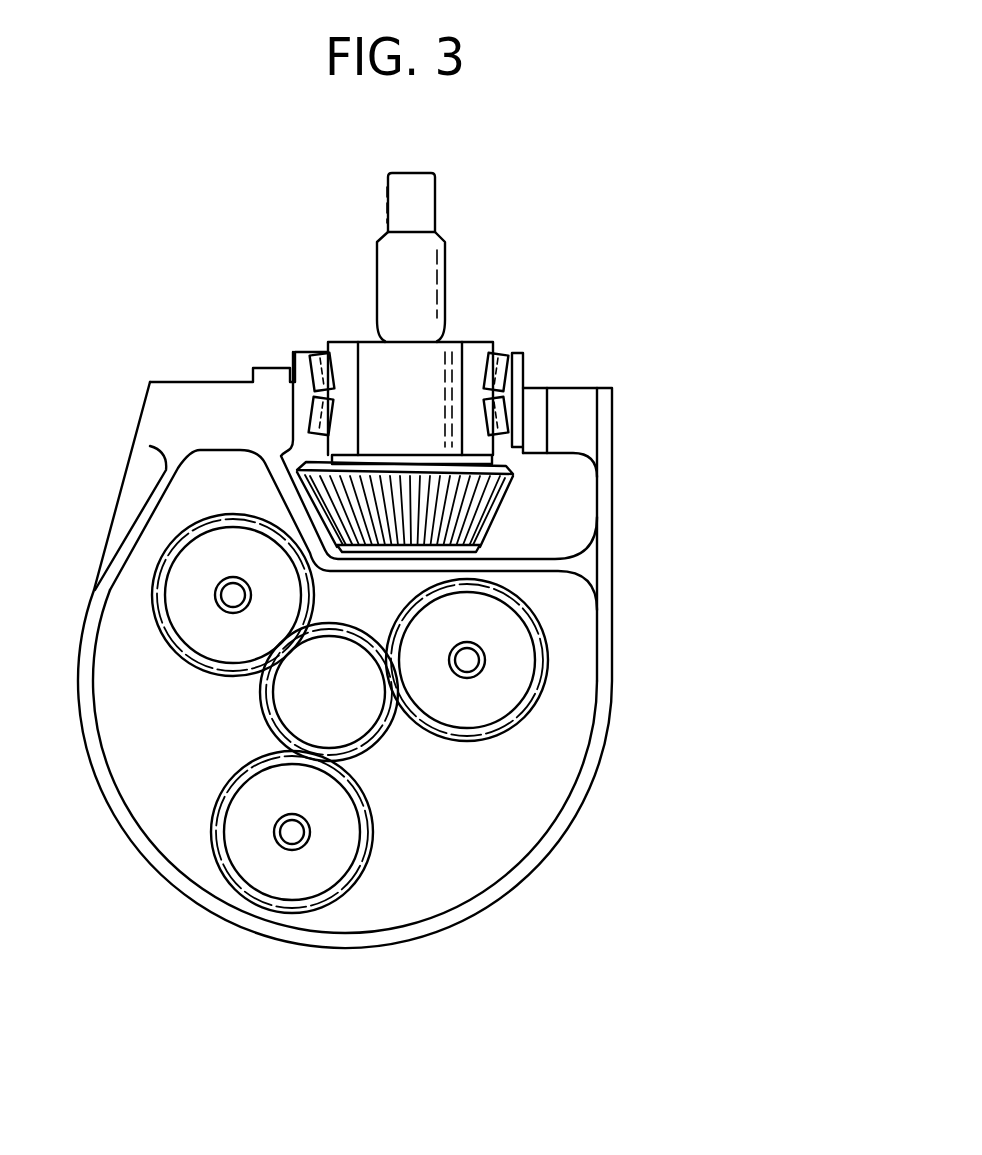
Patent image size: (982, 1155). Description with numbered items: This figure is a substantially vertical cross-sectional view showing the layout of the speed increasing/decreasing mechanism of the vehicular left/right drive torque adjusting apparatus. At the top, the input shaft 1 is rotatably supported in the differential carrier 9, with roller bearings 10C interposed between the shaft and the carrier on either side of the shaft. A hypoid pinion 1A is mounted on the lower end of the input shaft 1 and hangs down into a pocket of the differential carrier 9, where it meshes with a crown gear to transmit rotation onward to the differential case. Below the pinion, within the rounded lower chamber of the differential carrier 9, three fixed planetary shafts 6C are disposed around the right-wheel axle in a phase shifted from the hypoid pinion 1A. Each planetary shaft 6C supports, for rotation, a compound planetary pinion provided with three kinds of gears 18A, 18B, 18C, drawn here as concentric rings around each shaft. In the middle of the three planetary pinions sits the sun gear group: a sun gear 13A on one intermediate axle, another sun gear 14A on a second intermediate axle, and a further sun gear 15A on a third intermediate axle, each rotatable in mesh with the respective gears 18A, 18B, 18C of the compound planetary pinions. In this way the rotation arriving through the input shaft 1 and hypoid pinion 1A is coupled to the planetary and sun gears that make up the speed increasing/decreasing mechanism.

The input shaft 1 is at (450, 342).
The hypoid pinion 1A is at (517, 485).
The roller bearing 10C is at (523, 368).
The differential carrier 9 is at (612, 590).
The gear of the compound planetary pinion 18A is at (205, 535).
The gear of the compound planetary pinion 18B is at (413, 672).
The gear of the compound planetary pinion 18C is at (413, 672).
The fixed planetary shaft 6C is at (220, 594).
The sun gear 13A is at (369, 724).
The sun gear 14A is at (468, 770).
The sun gear 15A is at (468, 770).